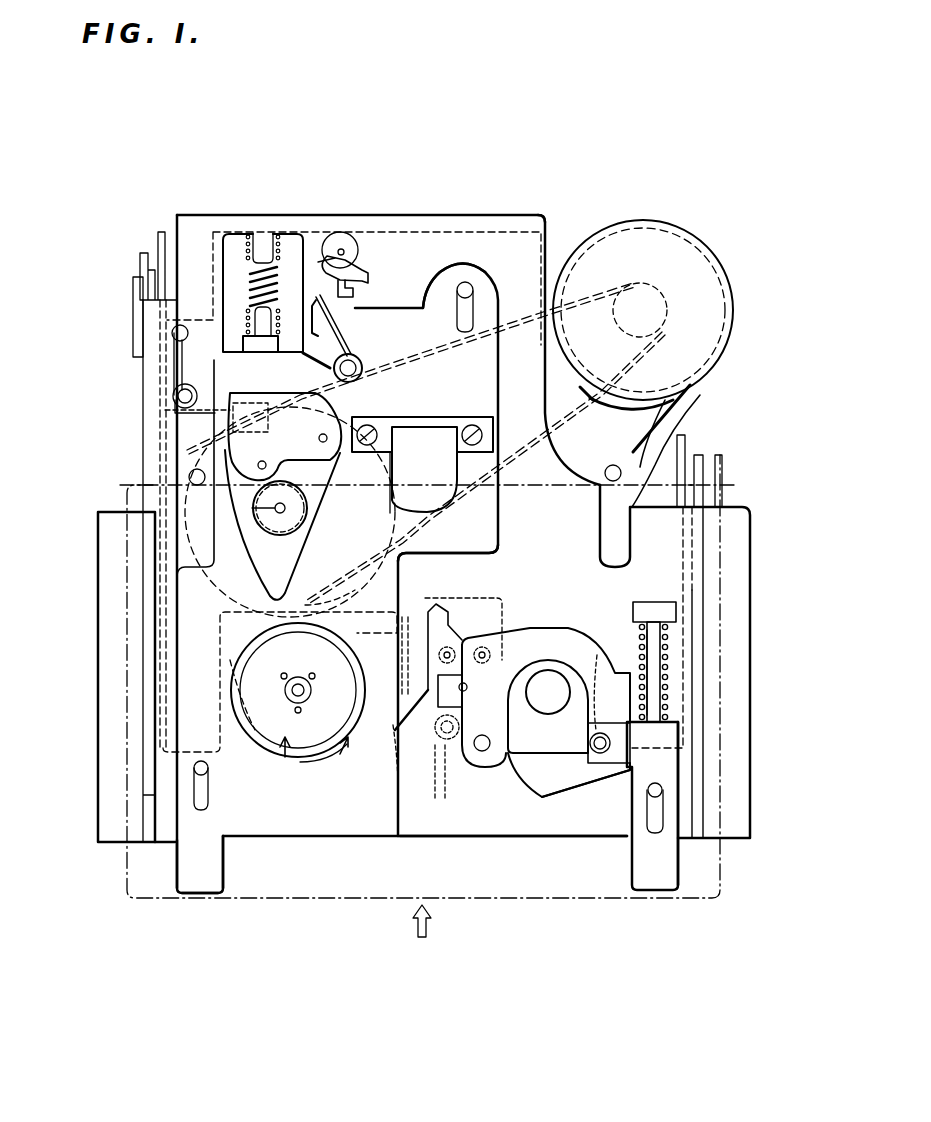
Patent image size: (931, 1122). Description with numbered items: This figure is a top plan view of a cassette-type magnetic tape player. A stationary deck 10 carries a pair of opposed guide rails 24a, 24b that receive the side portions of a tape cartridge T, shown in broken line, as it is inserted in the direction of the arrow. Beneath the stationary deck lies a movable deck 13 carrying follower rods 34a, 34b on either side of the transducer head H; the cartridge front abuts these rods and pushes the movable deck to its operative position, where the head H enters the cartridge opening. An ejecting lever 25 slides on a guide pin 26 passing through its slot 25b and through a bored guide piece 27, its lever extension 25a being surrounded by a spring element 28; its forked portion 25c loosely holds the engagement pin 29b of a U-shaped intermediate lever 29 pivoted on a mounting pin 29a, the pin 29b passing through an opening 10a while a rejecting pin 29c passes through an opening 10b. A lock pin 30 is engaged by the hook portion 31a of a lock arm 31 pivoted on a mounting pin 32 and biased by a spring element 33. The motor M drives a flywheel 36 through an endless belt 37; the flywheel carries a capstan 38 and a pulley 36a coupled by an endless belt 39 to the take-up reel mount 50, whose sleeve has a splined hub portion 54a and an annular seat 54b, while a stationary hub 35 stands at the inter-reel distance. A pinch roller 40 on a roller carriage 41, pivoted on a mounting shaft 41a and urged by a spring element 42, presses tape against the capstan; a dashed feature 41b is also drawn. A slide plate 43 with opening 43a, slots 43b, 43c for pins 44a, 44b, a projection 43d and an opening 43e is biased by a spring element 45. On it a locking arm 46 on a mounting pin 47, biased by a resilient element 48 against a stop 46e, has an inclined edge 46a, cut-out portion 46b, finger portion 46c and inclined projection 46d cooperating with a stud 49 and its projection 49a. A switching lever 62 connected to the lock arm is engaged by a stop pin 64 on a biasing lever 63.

The stationary deck 10 is at (490, 838).
The opening 10a is at (577, 790).
The opening 10b is at (455, 568).
The movable deck 13 is at (697, 385).
The tape cartridge T is at (335, 900).
The drive motor M is at (712, 276).
The transducer head H is at (445, 440).
The guide rail 24a is at (105, 817).
The guide rail 24b is at (752, 842).
The ejecting lever 25 is at (652, 878).
The lever extension 25a is at (652, 648).
The slot 25b is at (662, 835).
The forked portion 25c is at (597, 655).
The guide pin 26 is at (654, 790).
The bored guide piece 27 is at (665, 608).
The spring element 28 is at (665, 678).
The intermediate lever 29 is at (555, 640).
The mounting pin 29a is at (495, 800).
The engagement pin 29b is at (602, 754).
The rejecting pin 29c is at (487, 645).
The lock pin 30 is at (484, 752).
The lock arm 31 is at (428, 710).
The hook portion 31a is at (455, 640).
The mounting pin 32 is at (470, 765).
The spring element 33 is at (440, 740).
The follower rod 34a is at (190, 474).
The follower rod 34b is at (655, 422).
The stationary hub 35 is at (546, 700).
The flywheel 36 is at (205, 580).
The pulley 36a is at (255, 578).
The endless belt 37 is at (447, 347).
The capstan 38 is at (252, 508).
The endless belt 39 is at (230, 672).
The pinch roller 40 is at (225, 458).
The roller carriage 41 is at (255, 442).
The mounting shaft 41a is at (327, 437).
The cam lever tab 41b is at (232, 410).
The spring element 42 is at (180, 390).
The slide plate 43 is at (185, 722).
The opening 43a is at (245, 605).
The slot 43b is at (193, 810).
The slot 43c is at (541, 232).
The projection 43d is at (193, 878).
The opening 43e is at (265, 745).
The pin 44a is at (197, 762).
The pin 44b is at (470, 285).
The spring element 45 is at (250, 300).
The locking arm 46 is at (358, 356).
The inclined edge 46a is at (360, 268).
The cut-out portion 46b is at (338, 318).
The finger portion 46c is at (368, 296).
The inclined projection 46d is at (316, 298).
The stop 46e is at (322, 262).
The mounting pin 47 is at (275, 243).
The resilient element 48 is at (437, 286).
The stud 49 is at (339, 232).
The projection 49a is at (344, 256).
The take-up reel mount 50 is at (285, 702).
The splined hub portion 54a is at (300, 725).
The annular seat 54b is at (300, 762).
The switching lever 62 is at (318, 757).
The biasing lever 63 is at (348, 754).
The stop pin 64 is at (393, 725).